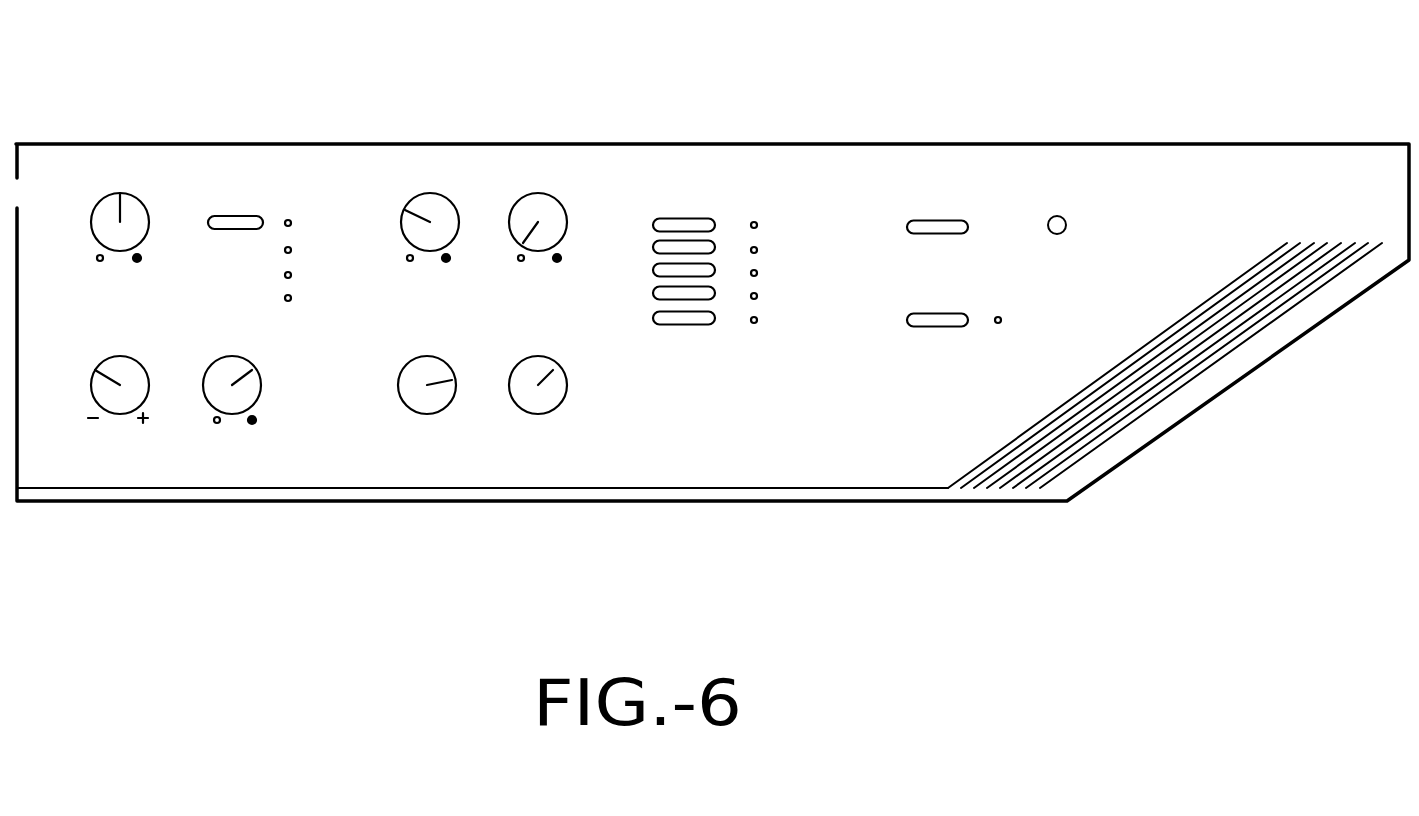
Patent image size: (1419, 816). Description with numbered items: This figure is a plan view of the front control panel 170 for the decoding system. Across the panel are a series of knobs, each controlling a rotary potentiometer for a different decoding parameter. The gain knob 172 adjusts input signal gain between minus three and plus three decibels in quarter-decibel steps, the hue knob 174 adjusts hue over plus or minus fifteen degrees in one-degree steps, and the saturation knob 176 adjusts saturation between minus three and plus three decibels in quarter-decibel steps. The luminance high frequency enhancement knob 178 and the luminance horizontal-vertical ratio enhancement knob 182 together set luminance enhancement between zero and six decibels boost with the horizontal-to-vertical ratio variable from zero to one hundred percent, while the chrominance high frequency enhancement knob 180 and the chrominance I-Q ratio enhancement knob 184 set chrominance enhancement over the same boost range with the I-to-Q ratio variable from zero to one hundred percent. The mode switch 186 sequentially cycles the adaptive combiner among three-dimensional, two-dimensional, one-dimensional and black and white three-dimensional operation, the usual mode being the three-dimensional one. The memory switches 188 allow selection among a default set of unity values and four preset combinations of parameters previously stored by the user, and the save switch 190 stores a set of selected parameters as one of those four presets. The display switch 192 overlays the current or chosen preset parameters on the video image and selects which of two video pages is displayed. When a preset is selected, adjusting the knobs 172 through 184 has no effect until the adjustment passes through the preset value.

The front control panel 170 is at (750, 418).
The gain knob 172 is at (147, 204).
The hue knob 174 is at (147, 373).
The saturation knob 176 is at (261, 380).
The luminance high frequency enhancement knob 178 is at (400, 198).
The chrominance high frequency enhancement knob 180 is at (562, 205).
The luminance horizontal-vertical ratio enhancement knob 182 is at (455, 390).
The chrominance I-Q ratio enhancement knob 184 is at (566, 388).
The mode switch 186 is at (263, 222).
The memory switches 188 is at (653, 318).
The save switch 190 is at (968, 228).
The display switch 192 is at (907, 326).